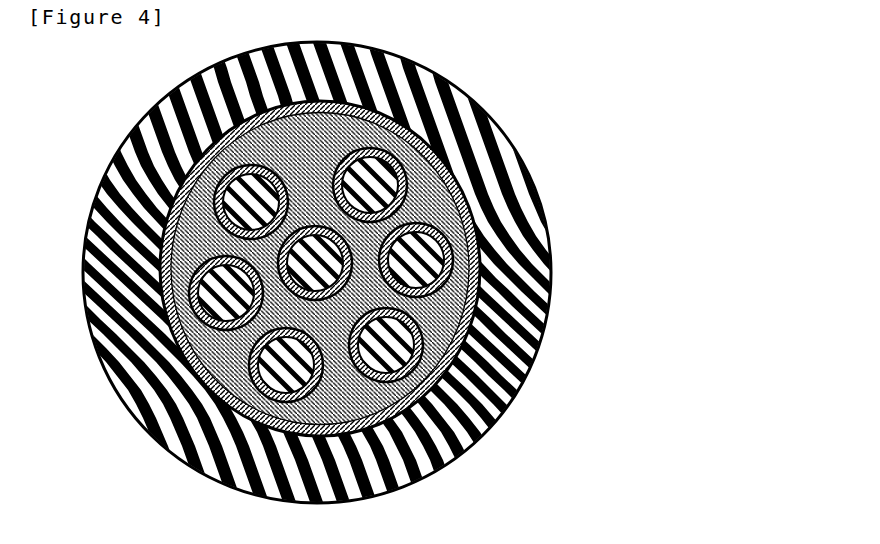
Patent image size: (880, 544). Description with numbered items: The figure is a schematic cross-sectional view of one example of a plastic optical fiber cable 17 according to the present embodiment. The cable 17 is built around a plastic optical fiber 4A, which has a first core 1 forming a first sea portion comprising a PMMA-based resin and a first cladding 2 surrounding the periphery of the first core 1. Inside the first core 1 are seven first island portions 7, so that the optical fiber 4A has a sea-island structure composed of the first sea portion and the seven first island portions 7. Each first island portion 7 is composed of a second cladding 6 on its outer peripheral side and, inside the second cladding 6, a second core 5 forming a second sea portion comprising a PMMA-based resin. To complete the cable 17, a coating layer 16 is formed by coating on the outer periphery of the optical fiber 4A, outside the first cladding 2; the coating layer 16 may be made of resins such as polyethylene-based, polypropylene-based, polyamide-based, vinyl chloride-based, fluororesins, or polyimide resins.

The first core 1 is at (445, 200).
The first cladding 2 is at (458, 142).
The plastic optical fiber 4A is at (461, 268).
The second core 5 is at (436, 262).
The second cladding 6 is at (439, 237).
The first island portion 7 is at (530, 254).
The coating layer 16 is at (483, 372).
The plastic optical fiber cable 17 is at (451, 271).